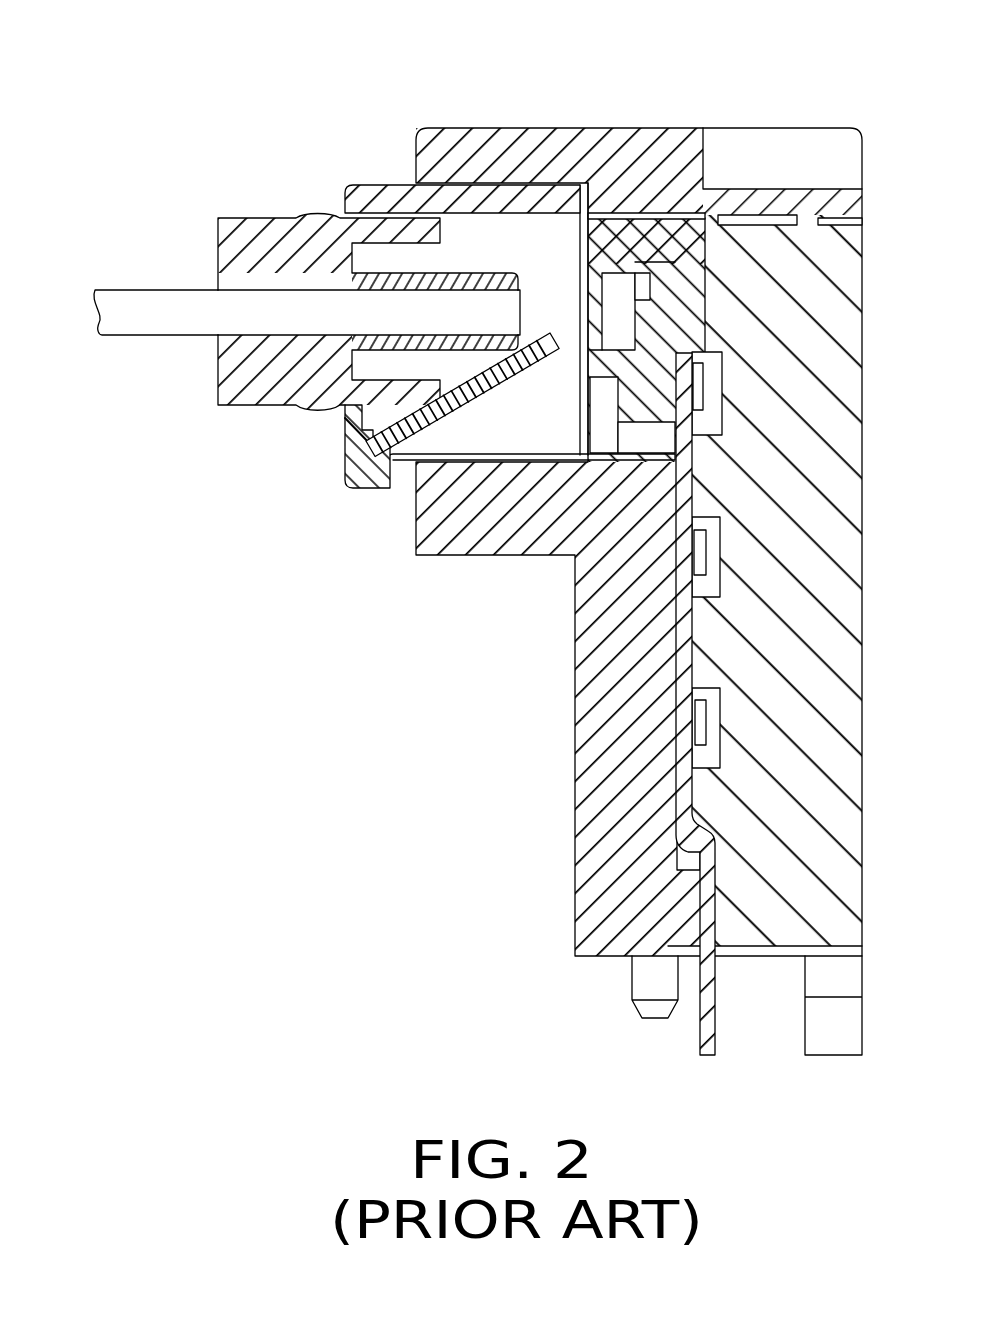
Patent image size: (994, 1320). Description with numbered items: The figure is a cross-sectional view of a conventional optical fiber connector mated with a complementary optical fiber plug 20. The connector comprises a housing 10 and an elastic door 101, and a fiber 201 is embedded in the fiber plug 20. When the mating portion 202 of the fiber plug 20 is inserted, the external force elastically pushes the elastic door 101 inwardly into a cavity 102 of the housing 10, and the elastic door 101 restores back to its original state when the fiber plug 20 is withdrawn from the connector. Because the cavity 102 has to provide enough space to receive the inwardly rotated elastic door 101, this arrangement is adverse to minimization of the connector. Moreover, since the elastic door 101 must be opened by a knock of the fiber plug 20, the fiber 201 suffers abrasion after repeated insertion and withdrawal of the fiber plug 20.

The housing 10 is at (577, 118).
The elastic door 101 is at (468, 407).
The cavity 102 is at (498, 233).
The fiber plug 20 is at (255, 205).
The fiber 201 is at (168, 318).
The mating portion 202 is at (415, 150).